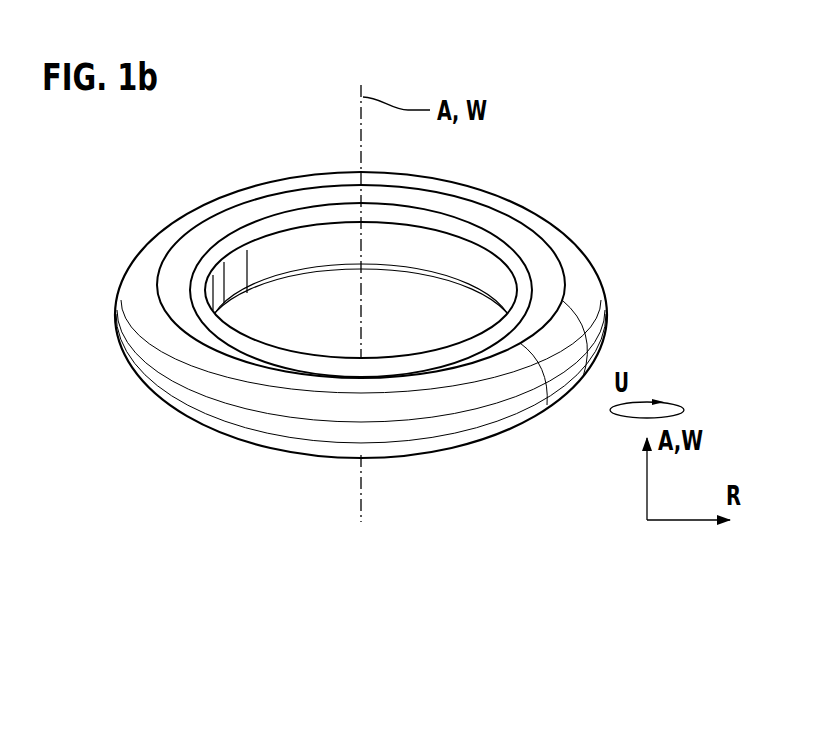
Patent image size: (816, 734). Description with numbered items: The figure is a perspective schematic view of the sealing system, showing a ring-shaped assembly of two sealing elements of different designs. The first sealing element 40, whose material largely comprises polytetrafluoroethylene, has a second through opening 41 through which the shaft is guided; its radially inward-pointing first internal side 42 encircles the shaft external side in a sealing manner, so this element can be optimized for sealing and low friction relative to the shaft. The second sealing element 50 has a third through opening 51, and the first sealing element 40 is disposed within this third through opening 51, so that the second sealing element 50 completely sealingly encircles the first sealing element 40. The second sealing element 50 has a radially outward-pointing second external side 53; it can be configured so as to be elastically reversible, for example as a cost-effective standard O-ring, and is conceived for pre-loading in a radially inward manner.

The first sealing element 40 is at (183, 255).
The second through opening 41 is at (410, 254).
The first internal side 42 is at (288, 252).
The second sealing element 50 is at (577, 274).
The third through opening 51 is at (553, 242).
The second external side 53 is at (606, 322).